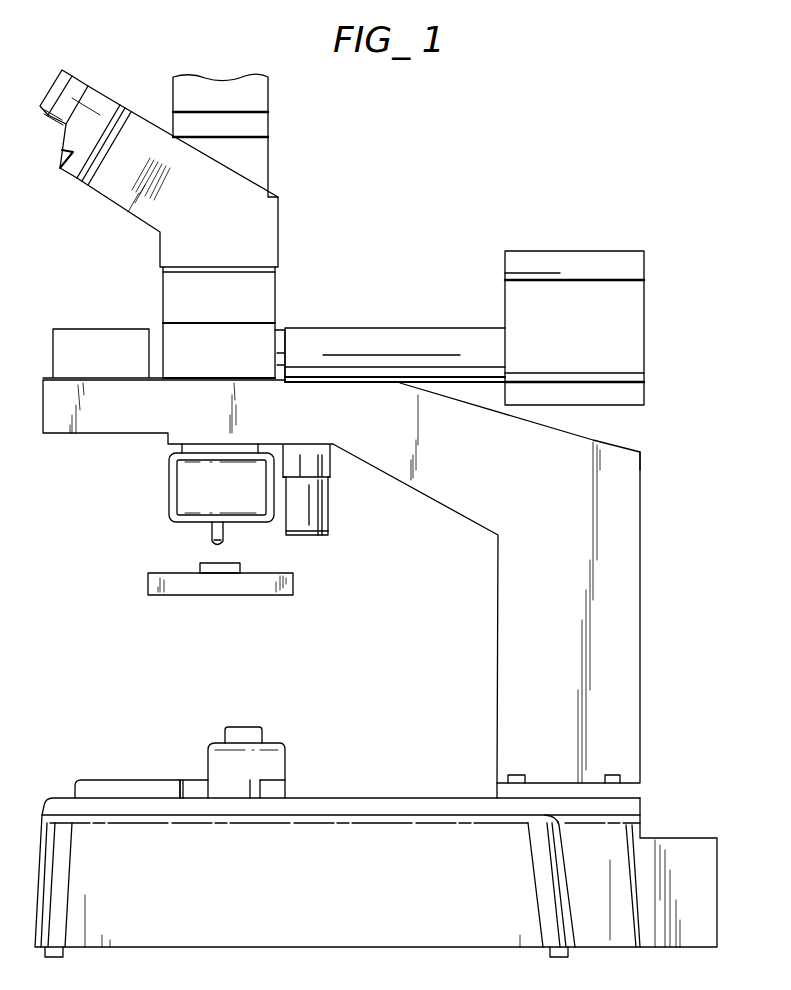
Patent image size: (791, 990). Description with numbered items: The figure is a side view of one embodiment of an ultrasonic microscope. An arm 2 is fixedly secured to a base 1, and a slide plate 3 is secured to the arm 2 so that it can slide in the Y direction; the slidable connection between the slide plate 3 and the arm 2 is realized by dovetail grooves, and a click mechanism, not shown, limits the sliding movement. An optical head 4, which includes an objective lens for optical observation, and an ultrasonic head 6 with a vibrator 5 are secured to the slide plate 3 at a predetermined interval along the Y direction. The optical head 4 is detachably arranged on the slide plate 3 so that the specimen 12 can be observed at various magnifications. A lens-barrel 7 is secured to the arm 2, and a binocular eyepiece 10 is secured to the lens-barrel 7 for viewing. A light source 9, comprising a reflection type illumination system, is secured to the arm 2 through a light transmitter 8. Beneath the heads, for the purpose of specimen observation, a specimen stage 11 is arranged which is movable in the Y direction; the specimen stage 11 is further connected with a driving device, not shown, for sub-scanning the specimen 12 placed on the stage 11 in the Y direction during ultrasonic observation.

The base 1 is at (388, 927).
The arm 2 is at (622, 550).
The slide plate 3 is at (165, 436).
The optical head 4 is at (320, 500).
The vibrator 5 is at (170, 485).
The ultrasonic head 6 is at (227, 535).
The lens-barrel 7 is at (262, 297).
The light transmitter 8 is at (393, 337).
The light source 9 is at (563, 251).
The binocular eyepiece 10 is at (102, 112).
The specimen stage 11 is at (186, 598).
The specimen 12 is at (200, 563).